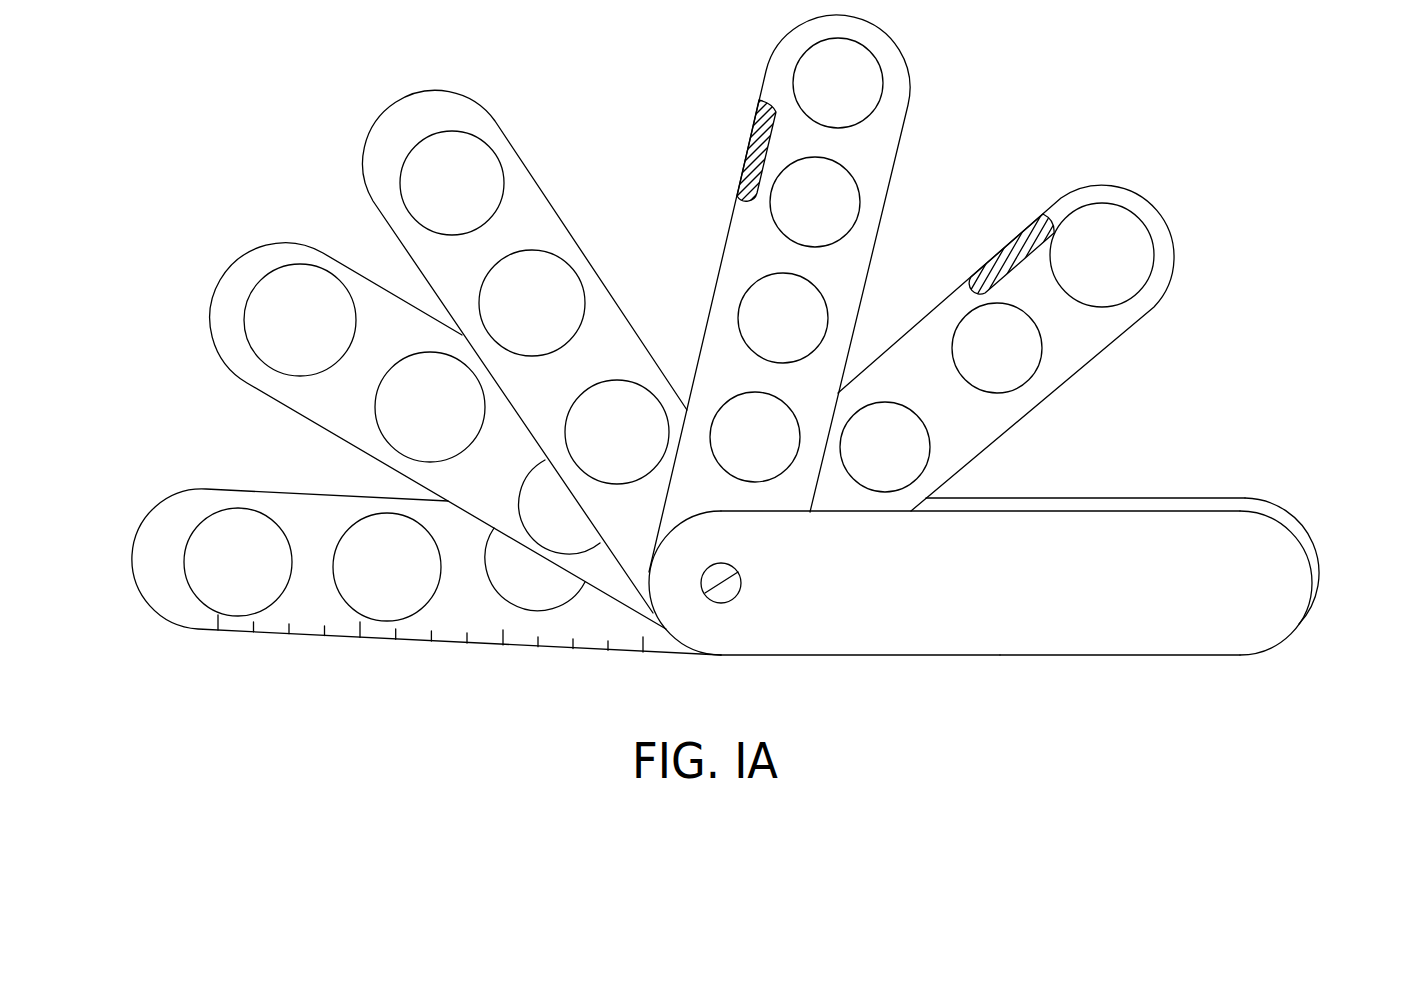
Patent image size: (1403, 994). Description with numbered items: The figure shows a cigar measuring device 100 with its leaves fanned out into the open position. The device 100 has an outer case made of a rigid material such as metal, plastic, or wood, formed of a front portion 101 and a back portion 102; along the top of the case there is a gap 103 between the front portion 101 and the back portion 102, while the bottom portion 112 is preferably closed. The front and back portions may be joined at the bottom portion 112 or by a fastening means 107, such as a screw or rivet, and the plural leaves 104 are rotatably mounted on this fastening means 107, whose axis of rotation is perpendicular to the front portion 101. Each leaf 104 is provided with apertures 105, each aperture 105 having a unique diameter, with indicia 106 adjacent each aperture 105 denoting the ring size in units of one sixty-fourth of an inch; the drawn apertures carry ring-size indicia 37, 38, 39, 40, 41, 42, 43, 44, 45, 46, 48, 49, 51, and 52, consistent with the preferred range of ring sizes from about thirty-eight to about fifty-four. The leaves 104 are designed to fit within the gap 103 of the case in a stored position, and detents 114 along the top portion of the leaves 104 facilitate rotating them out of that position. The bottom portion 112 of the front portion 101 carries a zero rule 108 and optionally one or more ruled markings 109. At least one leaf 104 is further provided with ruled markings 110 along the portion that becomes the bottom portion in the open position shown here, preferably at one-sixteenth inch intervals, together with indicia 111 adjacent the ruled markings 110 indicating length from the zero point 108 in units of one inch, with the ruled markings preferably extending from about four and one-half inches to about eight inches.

The cigar measuring device 100 is at (762, 363).
The front portion 101 is at (1020, 584).
The back portion 102 is at (1262, 498).
The gap 103 is at (1157, 502).
The leaves 104 is at (925, 286).
The aperture 105 is at (405, 436).
The indicia 106 is at (525, 351).
The fastening means 107 is at (740, 590).
The zero rule 108 is at (1163, 640).
The ruled markings 109 is at (722, 656).
The ruled markings 110 is at (431, 645).
The indicia 111 is at (192, 630).
The bottom portion 112 is at (993, 656).
The detents 114 is at (750, 134).
The gauge hole 37 is at (755, 450).
The gauge hole 38 is at (783, 333).
The gauge hole 39 is at (815, 215).
The gauge hole 40 is at (838, 99).
The gauge hole 41 is at (873, 458).
The gauge hole 42 is at (985, 360).
The gauge hole 43 is at (1091, 261).
The gauge hole 44 is at (618, 444).
The gauge hole 45 is at (535, 317).
The gauge hole 46 is at (454, 197).
The gauge hole 48 is at (445, 408).
The gauge hole 49 is at (308, 325).
The gauge hole 51 is at (405, 567).
The gauge hole 52 is at (255, 562).